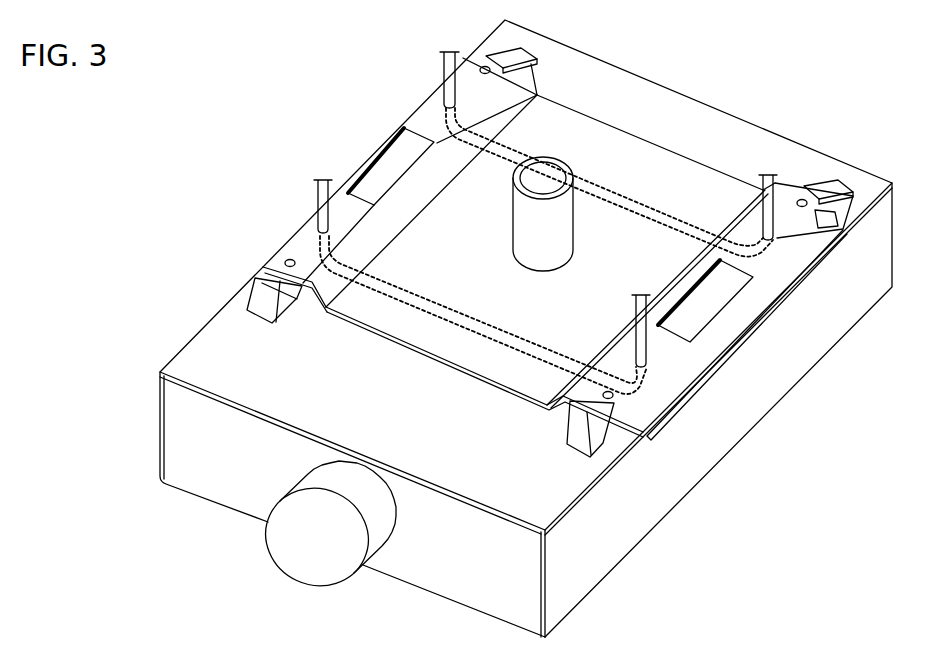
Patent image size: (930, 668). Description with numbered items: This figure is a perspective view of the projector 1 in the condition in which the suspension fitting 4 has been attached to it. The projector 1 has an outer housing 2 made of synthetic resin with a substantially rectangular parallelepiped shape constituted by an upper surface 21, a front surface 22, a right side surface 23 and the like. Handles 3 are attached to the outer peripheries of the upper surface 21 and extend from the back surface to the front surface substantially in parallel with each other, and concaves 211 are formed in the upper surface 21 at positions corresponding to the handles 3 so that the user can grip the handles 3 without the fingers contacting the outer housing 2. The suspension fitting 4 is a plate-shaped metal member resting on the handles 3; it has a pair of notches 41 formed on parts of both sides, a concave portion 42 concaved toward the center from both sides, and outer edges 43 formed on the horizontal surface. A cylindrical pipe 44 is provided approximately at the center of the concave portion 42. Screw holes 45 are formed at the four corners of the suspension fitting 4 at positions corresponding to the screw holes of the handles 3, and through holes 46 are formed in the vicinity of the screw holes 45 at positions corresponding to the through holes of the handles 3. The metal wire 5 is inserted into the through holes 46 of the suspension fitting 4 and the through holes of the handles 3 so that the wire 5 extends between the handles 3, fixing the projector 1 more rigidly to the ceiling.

The projector 1 is at (336, 119).
The outer housing 2 is at (193, 355).
The upper surface 21 is at (650, 100).
The concaves 211 is at (743, 322).
The front surface 22 is at (420, 578).
The right side surface 23 is at (737, 425).
The handles 3 is at (272, 290).
The suspension fitting 4 is at (602, 133).
The notches 41 is at (687, 297).
The concave portion 42 is at (410, 327).
The outer edges 43 is at (630, 365).
The cylindrical pipe 44 is at (523, 222).
The screw holes 45 is at (800, 200).
The through holes 46 is at (763, 225).
The wire 5 is at (443, 73).